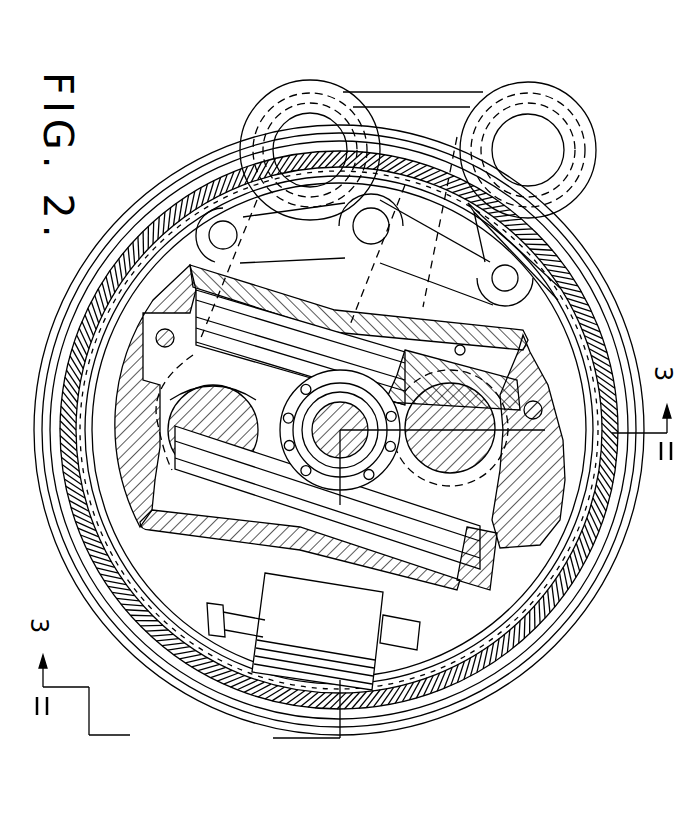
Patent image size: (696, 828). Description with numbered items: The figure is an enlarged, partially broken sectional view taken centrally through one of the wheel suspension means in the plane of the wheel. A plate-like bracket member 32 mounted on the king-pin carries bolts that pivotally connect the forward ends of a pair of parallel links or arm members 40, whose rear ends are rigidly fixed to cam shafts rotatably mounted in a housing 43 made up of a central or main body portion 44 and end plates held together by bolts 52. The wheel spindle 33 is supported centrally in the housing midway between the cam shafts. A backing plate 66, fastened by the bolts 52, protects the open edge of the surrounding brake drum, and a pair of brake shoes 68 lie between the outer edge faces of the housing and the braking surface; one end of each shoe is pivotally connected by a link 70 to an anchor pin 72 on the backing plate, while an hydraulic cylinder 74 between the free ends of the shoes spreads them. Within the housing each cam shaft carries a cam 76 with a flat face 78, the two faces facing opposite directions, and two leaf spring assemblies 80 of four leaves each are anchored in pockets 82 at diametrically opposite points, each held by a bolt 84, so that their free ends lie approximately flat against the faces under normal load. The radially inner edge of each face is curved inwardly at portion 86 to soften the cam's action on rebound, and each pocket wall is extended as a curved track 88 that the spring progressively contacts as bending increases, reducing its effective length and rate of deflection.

The plate-like bracket member 32 is at (418, 95).
The shaft 33 is at (351, 430).
The parallel links or arm members 40 is at (341, 238).
The housing 43 is at (228, 537).
The central or main body portion 44 is at (400, 621).
The bolts 52 is at (130, 452).
The backing plate 66 is at (135, 207).
The brake shoes 68 is at (90, 395).
The link 70 is at (378, 252).
The anchor pin 72 is at (359, 307).
The hydraulic cylinder 74 is at (317, 631).
The cam 76 is at (215, 397).
The flat face 78 is at (178, 412).
The leaf spring assemblies 80 is at (290, 408).
The pocket 82 is at (172, 320).
The bolt 84 is at (212, 396).
The curved portion 86 is at (331, 427).
The curved track 88 is at (460, 345).